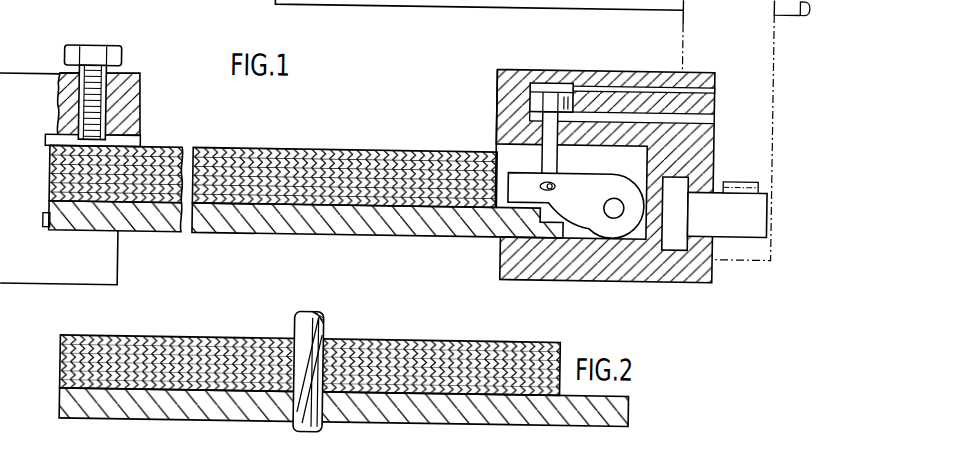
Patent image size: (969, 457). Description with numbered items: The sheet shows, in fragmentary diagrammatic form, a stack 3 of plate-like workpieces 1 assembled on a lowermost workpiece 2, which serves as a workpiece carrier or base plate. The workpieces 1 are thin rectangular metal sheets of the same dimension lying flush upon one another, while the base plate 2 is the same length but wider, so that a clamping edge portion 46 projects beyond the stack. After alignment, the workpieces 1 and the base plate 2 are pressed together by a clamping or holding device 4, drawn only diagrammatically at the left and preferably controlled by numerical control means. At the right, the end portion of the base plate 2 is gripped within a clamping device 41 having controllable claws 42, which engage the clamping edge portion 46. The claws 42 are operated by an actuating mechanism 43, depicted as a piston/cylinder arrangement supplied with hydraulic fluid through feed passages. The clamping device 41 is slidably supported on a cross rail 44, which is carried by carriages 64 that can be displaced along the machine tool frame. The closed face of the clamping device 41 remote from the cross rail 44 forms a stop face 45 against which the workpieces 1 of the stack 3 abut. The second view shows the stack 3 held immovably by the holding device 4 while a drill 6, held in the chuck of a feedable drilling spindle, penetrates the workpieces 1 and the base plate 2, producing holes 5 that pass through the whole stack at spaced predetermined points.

In FIG. 1, the workpieces 1 is at (362, 193).
In FIG. 1, the lowermost workpiece 2 is at (345, 231).
In FIG. 1, the stack 3 is at (211, 150).
In FIG. 1, the clamping or holding device 4 is at (42, 267).
In FIG. 1, the clamping device 41 is at (596, 279).
In FIG. 1, the controllable claws 42 is at (592, 160).
In FIG. 1, the actuating mechanism 43 is at (560, 86).
In FIG. 1, the cross rail 44 is at (674, 233).
In FIG. 1, the stop face 45 is at (493, 147).
In FIG. 1, the clamping edge portion 46 is at (530, 226).
In FIG. 1, the carriages 64 is at (748, 257).
In FIG. 2, the holes 5 is at (298, 420).
In FIG. 2, the drill 6 is at (322, 333).